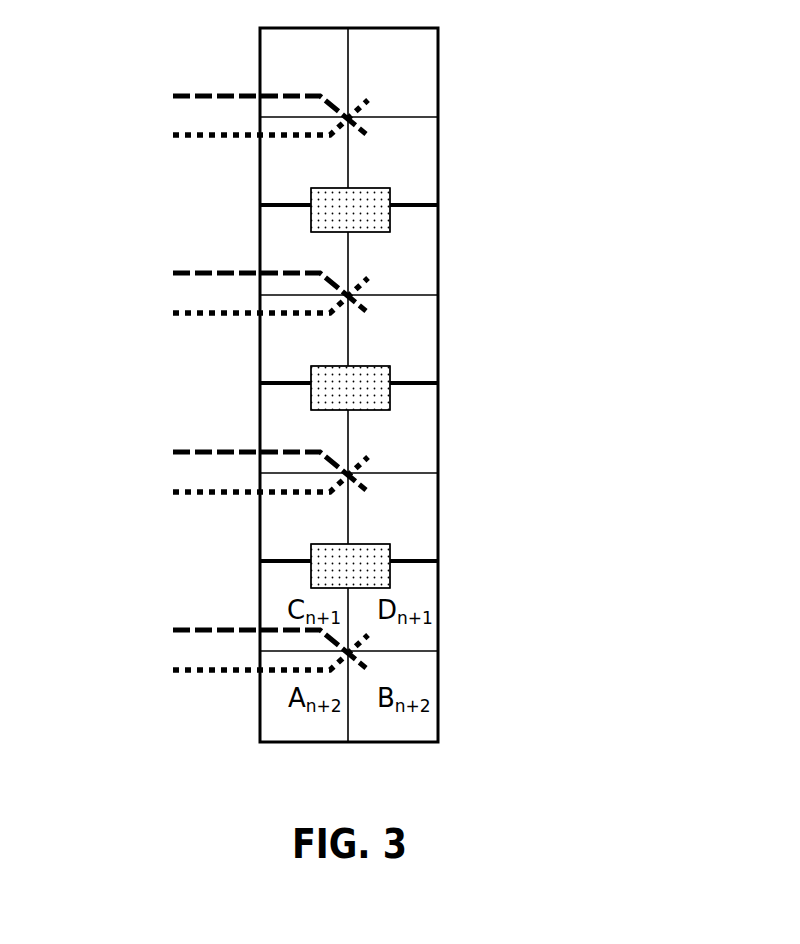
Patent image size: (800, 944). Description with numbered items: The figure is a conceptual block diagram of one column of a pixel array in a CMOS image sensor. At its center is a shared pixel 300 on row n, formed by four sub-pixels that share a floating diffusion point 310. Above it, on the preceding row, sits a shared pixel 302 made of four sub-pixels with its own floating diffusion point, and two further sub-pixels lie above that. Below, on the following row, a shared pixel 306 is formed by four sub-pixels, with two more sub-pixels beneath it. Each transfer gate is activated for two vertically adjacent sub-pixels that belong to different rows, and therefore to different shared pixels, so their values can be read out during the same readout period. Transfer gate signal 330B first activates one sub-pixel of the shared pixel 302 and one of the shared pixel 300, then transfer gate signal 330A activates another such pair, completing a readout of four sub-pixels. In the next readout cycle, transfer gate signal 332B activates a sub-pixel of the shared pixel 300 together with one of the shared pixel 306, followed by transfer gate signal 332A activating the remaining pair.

The shared pixel 300 is at (502, 351).
The shared pixel 302 is at (463, 120).
The shared pixel 306 is at (463, 476).
The floating diffusion point 310 is at (382, 390).
The transfer gate signal 330A is at (174, 313).
The transfer gate signal 330B is at (187, 270).
The transfer gate signal 332A is at (226, 495).
The transfer gate signal 332B is at (183, 454).